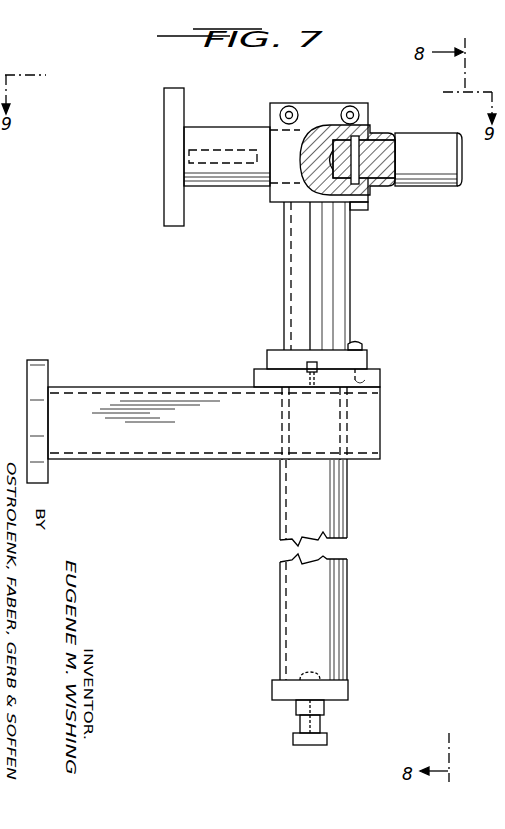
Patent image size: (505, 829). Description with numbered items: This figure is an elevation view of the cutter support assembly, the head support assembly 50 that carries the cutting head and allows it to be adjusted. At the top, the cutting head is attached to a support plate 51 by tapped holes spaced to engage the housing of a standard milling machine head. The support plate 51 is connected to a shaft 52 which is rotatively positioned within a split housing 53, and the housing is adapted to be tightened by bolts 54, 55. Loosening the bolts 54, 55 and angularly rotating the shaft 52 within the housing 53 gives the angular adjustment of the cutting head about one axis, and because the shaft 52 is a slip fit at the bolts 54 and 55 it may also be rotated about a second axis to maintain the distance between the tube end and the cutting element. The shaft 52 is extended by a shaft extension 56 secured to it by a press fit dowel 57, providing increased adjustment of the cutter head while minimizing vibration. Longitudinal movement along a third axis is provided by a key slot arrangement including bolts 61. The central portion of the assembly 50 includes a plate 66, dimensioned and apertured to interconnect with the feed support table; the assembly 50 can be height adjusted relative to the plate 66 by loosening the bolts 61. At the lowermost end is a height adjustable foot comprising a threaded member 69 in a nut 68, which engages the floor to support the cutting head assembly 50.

The head support assembly 50 is at (380, 290).
The support plate 51 is at (186, 108).
The shaft 52 is at (222, 132).
The split housing 53 is at (310, 103).
The bolt 54 is at (357, 107).
The bolt 55 is at (282, 108).
The shaft extension 56 is at (392, 162).
The press fit dowel 57 is at (357, 210).
The bolts 61 is at (360, 344).
The plate 66 is at (42, 361).
The nut 68 is at (325, 708).
The threaded member 69 is at (328, 740).